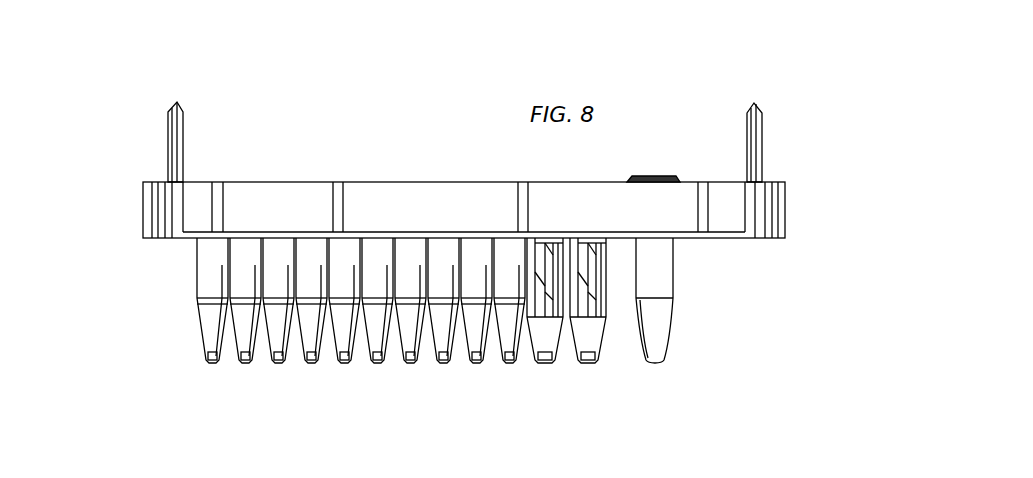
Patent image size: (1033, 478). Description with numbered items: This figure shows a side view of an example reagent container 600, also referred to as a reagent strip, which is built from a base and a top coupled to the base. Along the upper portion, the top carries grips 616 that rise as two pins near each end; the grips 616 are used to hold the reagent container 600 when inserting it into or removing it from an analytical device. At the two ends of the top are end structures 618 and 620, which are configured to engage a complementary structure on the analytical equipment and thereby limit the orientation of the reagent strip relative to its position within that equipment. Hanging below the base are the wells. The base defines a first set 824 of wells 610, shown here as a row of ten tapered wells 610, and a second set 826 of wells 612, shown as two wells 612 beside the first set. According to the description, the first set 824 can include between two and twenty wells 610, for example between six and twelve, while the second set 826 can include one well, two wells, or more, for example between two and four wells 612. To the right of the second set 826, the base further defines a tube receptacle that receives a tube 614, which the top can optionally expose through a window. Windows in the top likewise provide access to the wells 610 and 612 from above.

The reagent container 600 is at (471, 132).
The well 610 is at (156, 300).
The well 612 is at (598, 350).
The tube 614 is at (665, 325).
The grip 616 is at (178, 103).
The end structure 618 is at (146, 212).
The end structure 620 is at (785, 197).
The first set of wells 824 is at (305, 337).
The second set of wells 826 is at (672, 337).